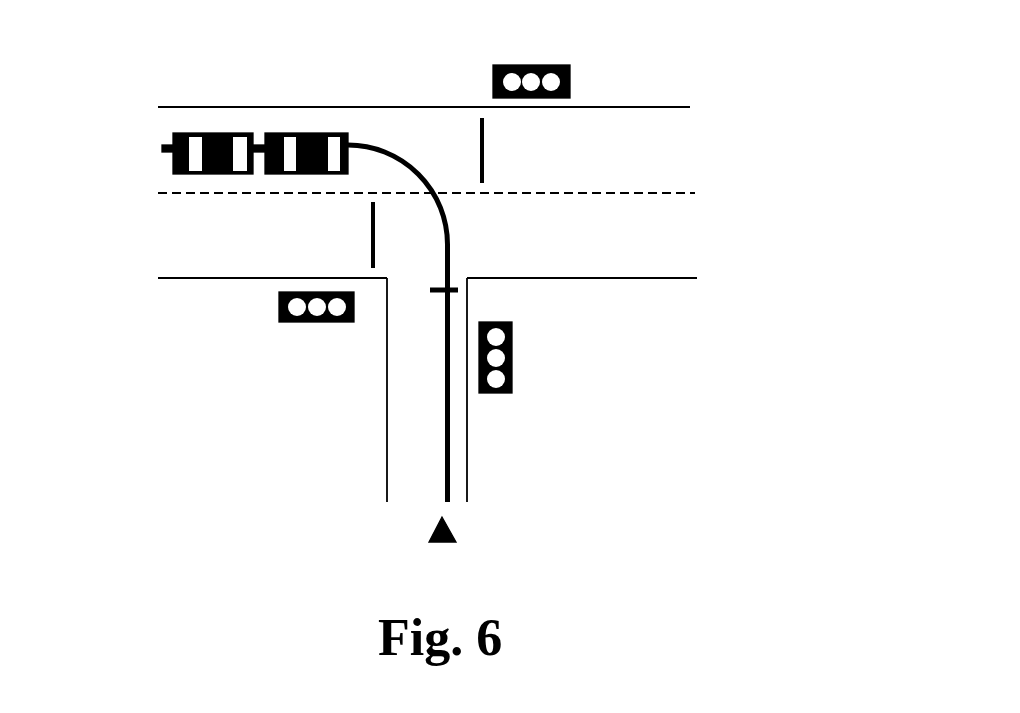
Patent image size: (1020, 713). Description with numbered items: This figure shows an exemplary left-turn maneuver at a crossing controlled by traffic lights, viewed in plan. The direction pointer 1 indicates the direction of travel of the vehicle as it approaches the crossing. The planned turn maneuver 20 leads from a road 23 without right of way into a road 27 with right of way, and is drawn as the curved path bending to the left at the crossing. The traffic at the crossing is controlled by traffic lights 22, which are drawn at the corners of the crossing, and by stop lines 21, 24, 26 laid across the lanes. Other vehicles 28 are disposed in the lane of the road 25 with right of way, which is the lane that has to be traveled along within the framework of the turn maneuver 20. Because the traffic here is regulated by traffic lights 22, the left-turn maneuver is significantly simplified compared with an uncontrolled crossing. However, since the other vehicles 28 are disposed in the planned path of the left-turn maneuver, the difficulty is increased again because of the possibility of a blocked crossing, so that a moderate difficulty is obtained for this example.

The direction pointer 1 is at (452, 525).
The planned turn maneuver 20 is at (400, 160).
The stop line 21 is at (360, 212).
The traffic lights 22 is at (575, 65).
The road without right of way 23 is at (413, 422).
The stop line 24 is at (485, 127).
The road with right of way 25 is at (548, 132).
The stop line 26 is at (467, 280).
The road with right of way 27 is at (669, 238).
The other vehicles 28 is at (297, 133).